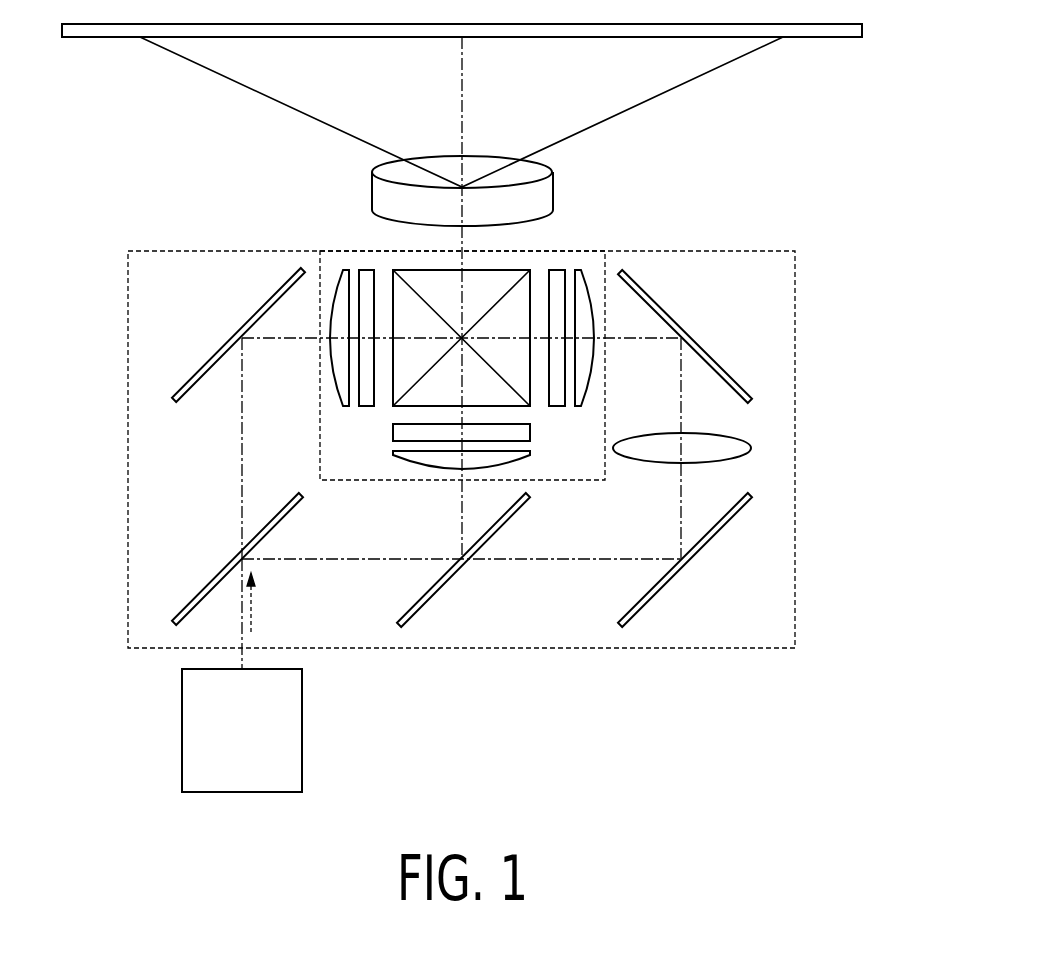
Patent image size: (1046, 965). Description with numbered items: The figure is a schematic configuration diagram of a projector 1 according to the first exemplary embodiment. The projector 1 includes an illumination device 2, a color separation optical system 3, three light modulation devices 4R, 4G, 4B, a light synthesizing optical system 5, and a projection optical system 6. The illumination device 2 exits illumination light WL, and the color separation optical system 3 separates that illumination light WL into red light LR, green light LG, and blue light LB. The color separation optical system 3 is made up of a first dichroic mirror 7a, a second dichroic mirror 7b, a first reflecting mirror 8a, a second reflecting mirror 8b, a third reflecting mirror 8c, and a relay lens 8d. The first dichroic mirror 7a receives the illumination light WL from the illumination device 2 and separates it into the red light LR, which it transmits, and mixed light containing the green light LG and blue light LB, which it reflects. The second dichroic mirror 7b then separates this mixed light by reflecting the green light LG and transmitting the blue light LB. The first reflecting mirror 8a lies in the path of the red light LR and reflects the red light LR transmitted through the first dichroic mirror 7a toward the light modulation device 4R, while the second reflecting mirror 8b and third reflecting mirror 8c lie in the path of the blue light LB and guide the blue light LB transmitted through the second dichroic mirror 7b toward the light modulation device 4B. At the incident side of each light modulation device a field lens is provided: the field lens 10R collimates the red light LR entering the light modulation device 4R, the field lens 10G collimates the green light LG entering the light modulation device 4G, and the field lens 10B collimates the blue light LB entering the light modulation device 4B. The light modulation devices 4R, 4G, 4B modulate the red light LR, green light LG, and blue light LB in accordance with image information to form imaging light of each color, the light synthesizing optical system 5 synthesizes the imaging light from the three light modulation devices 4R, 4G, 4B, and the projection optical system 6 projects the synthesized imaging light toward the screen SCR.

The projector 1 is at (803, 225).
The illumination device 2 is at (302, 725).
The color separation optical system 3 is at (128, 392).
The light modulation device 4R is at (366, 268).
The light modulation device 4G is at (393, 432).
The light modulation device 4B is at (558, 268).
The light synthesizing optical system 5 is at (487, 278).
The projection optical system 6 is at (442, 166).
The first dichroic mirror 7a is at (205, 590).
The second dichroic mirror 7b is at (440, 592).
The first reflecting mirror 8a is at (213, 353).
The second reflecting mirror 8b is at (708, 543).
The third reflecting mirror 8c is at (712, 357).
The relay lens 8d is at (750, 445).
The field lens 10R is at (340, 270).
The field lens 10G is at (393, 460).
The field lens 10B is at (582, 270).
The screen SCR is at (826, 37).
The illumination light WL is at (253, 612).
The red light LR is at (242, 470).
The green light LG is at (460, 515).
The blue light LB is at (681, 505).